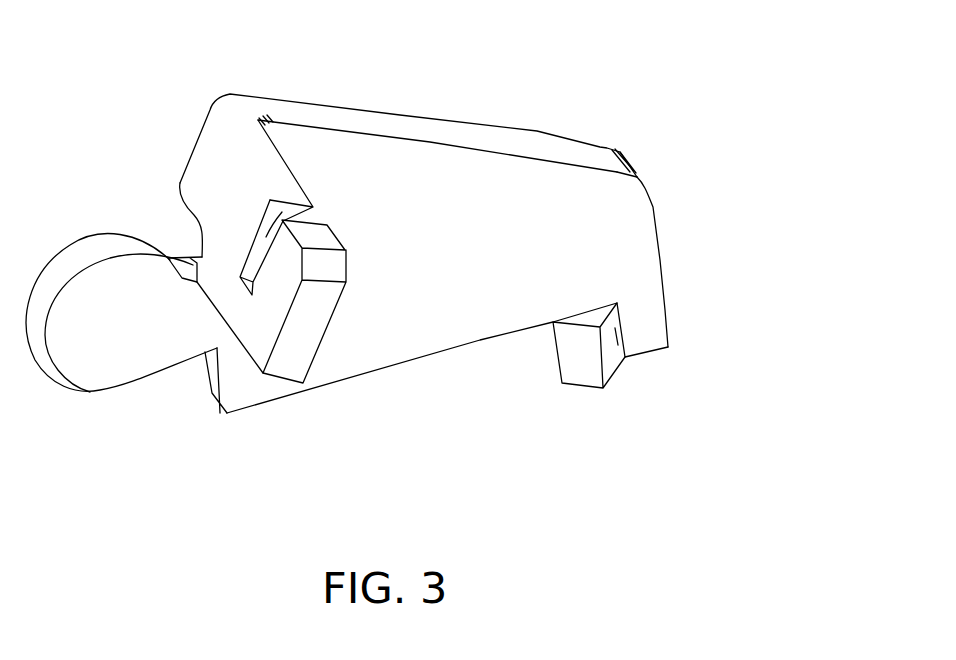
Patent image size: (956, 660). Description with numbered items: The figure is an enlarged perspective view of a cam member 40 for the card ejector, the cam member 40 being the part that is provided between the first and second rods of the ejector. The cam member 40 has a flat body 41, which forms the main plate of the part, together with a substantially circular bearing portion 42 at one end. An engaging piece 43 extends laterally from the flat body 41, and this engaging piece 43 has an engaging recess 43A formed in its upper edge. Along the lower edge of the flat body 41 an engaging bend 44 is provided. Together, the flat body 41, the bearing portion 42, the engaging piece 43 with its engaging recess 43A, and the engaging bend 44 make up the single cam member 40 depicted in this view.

The cam member 40 is at (543, 118).
The flat body 41 is at (417, 202).
The bearing portion 42 is at (102, 357).
The engaging piece 43 is at (240, 202).
The engaging recess 43A is at (267, 237).
The engaging bend 44 is at (613, 357).